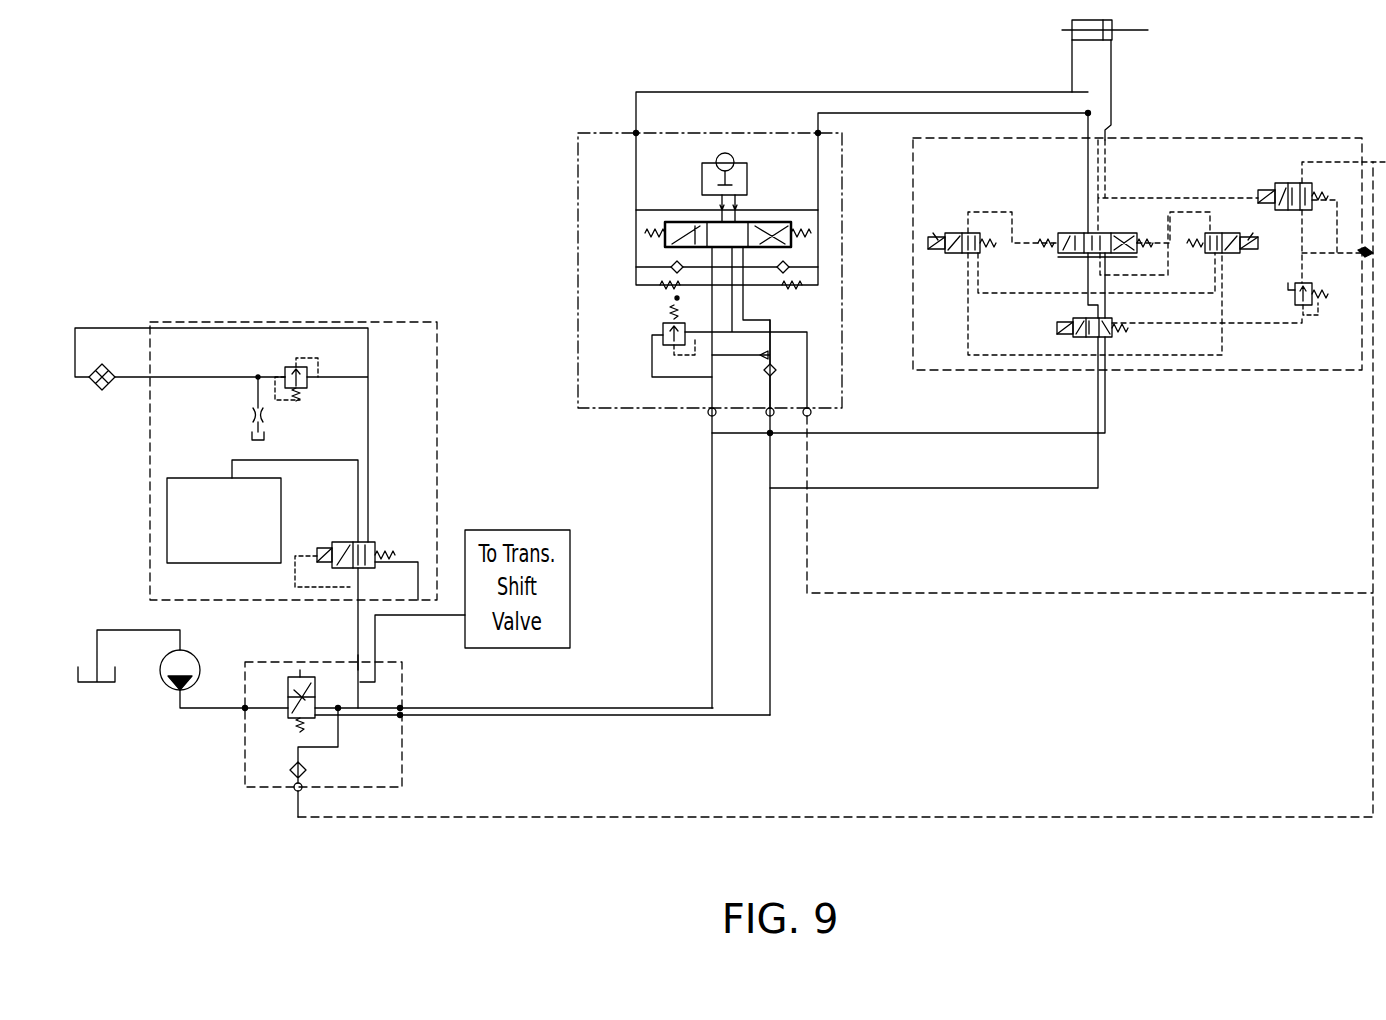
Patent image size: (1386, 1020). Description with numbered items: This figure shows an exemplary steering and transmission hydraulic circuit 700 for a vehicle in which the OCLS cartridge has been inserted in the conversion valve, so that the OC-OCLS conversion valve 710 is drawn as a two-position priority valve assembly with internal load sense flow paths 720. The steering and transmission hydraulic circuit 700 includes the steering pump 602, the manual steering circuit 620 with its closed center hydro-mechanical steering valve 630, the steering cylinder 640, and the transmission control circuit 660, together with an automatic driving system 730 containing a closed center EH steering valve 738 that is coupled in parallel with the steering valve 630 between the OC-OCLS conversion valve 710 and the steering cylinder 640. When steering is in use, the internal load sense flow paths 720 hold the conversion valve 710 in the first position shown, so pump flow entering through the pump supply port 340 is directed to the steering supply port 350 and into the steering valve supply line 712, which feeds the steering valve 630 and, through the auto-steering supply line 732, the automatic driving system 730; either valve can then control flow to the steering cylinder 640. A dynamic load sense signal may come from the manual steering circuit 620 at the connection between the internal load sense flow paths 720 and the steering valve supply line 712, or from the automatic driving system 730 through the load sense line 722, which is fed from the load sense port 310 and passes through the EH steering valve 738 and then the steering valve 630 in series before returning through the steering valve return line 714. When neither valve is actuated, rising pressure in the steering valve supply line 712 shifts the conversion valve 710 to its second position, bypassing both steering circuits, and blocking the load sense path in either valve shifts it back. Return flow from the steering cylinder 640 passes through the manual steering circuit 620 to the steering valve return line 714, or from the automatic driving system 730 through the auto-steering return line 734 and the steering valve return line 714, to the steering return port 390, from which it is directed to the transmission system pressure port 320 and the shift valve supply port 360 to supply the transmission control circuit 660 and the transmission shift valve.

The steering and transmission hydraulic circuit 700 is at (368, 186).
The transmission control circuit 660 is at (400, 348).
The manual steering circuit 620 is at (535, 162).
The steering valve 630 is at (662, 240).
The steering cylinder 640 is at (1072, 40).
The automatic driving system 730 is at (1232, 104).
The EH steering valve 738 is at (1068, 232).
The auto-steering return line 734 is at (950, 433).
The auto-steering supply line 732 is at (970, 488).
The steering valve return line 714 is at (711, 683).
The steering valve supply line 712 is at (771, 680).
The load sense line 722 is at (905, 815).
The steering pump 602 is at (165, 684).
The pump supply port 340 is at (243, 710).
The OC-OCLS conversion valve 710 is at (286, 700).
The internal load sense flow paths 720 is at (340, 737).
The load sense port 310 is at (294, 789).
The transmission system pressure port 320 is at (356, 661).
The shift valve supply port 360 is at (378, 662).
The steering return port 390 is at (403, 706).
The steering supply port 350 is at (403, 717).